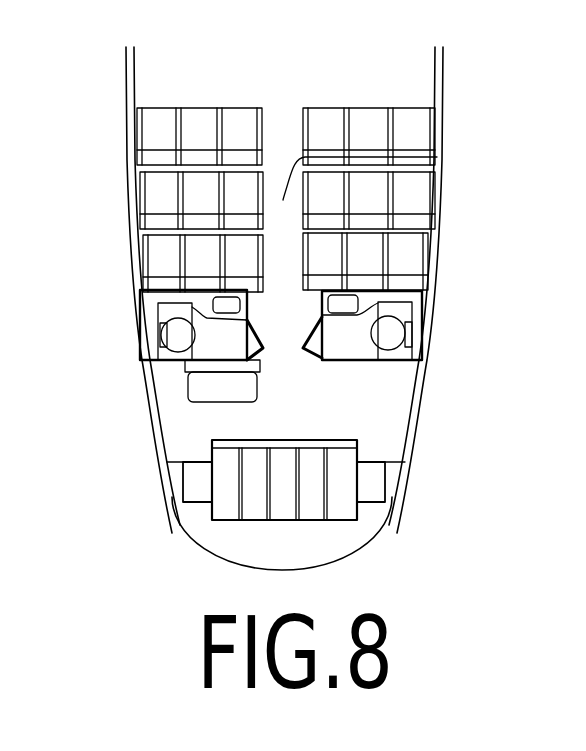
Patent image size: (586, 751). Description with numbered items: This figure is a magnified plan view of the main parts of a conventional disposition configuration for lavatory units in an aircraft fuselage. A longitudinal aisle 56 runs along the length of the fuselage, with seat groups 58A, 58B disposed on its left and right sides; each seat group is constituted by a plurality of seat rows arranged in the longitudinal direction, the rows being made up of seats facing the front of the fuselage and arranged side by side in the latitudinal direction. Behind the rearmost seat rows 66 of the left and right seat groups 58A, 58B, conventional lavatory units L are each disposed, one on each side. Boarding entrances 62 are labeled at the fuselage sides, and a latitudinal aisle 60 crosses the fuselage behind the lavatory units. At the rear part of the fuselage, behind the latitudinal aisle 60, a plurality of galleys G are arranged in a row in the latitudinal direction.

The seat group 58A is at (160, 159).
The seat group 58B is at (405, 156).
The longitudinal aisle 56 is at (437, 157).
The rearmost seat row 66 is at (301, 308).
The boarding entrance 62 is at (148, 413).
The latitudinal aisle 60 is at (333, 397).
The lavatory unit L is at (140, 315).
The galley G is at (290, 522).